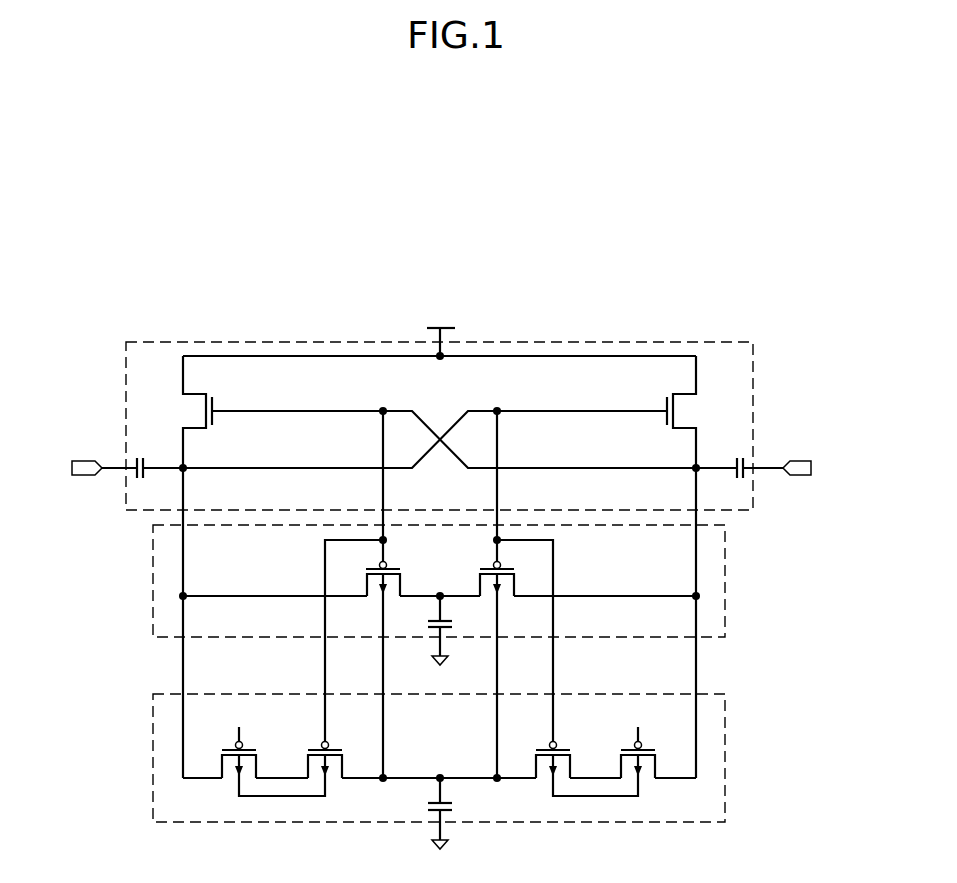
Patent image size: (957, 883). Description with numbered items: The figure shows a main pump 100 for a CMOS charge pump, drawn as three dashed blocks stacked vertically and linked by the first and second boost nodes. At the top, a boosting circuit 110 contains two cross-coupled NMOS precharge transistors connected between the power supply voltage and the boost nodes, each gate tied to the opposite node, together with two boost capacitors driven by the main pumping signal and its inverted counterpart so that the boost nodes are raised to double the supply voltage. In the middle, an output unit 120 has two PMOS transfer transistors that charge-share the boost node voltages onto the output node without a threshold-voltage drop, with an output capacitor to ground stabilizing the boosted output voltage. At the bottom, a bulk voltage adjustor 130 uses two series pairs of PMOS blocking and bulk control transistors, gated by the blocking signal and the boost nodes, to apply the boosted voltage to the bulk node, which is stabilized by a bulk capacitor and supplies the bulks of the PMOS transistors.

The main pump 100 is at (690, 328).
The boosting circuit 110 is at (753, 388).
The output unit 120 is at (725, 572).
The bulk voltage adjustor 130 is at (725, 740).